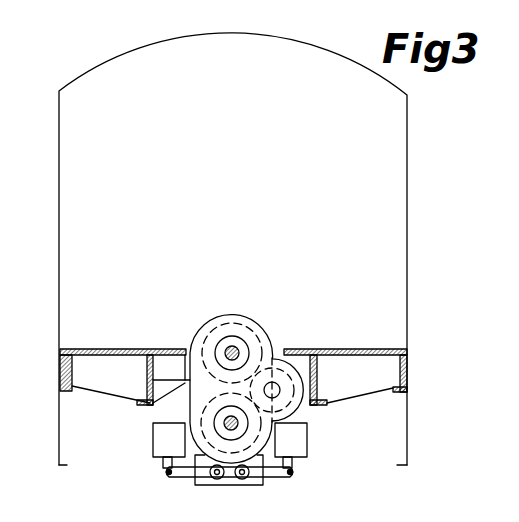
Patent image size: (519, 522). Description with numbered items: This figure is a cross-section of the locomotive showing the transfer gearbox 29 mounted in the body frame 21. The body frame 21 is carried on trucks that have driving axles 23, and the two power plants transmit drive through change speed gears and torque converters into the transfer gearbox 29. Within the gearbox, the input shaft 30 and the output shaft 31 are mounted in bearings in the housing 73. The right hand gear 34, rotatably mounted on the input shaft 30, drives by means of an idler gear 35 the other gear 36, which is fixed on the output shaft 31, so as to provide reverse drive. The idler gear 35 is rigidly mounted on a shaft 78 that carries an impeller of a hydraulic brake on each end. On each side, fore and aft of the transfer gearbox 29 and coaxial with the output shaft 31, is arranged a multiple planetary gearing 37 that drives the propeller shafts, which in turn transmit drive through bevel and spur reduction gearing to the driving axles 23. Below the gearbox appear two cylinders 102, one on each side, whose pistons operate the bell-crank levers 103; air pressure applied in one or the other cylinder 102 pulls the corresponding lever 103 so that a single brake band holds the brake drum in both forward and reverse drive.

The body frame 21 is at (409, 366).
The driving axle 23 is at (243, 30).
The multiple planetary gearing 37 is at (24, 0).
The transfer gearbox 29 is at (253, 321).
The reverse gear 34 is at (213, 328).
The input shaft 30 is at (234, 352).
The housing 73 is at (195, 338).
The idler gear 35 is at (312, 354).
The output shaft 31 is at (226, 422).
The shaft 78 is at (278, 396).
The cylinder 102 is at (153, 434).
The bell-crank lever 103 is at (183, 477).
The reverse gear 36 is at (229, 450).